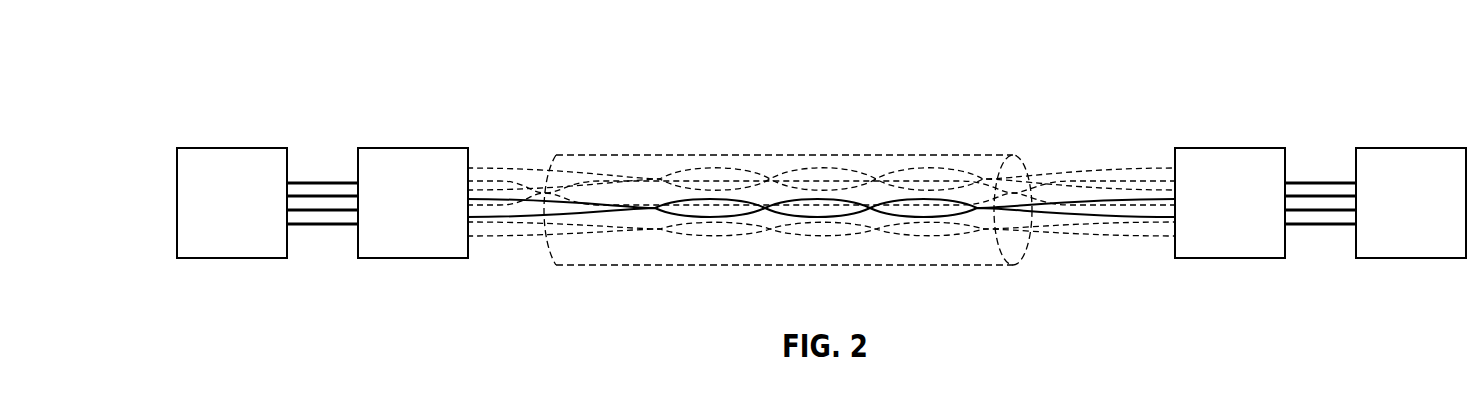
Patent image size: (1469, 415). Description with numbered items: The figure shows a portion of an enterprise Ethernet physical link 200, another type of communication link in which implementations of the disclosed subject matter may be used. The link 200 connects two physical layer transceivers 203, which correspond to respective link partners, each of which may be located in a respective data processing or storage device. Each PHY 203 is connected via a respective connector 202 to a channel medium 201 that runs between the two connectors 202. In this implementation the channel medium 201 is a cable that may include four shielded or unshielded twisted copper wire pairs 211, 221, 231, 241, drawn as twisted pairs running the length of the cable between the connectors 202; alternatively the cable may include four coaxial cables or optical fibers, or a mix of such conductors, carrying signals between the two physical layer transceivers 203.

The enterprise Ethernet physical link 200 is at (195, 58).
The channel medium 201 is at (918, 155).
The connector 202 is at (431, 148).
The physical layer transceiver 203 is at (249, 148).
The twisted copper wire pair 211 is at (1073, 237).
The twisted copper wire pair 221 is at (1143, 223).
The twisted copper wire pair 231 is at (1043, 182).
The twisted copper wire pair 241 is at (1111, 169).